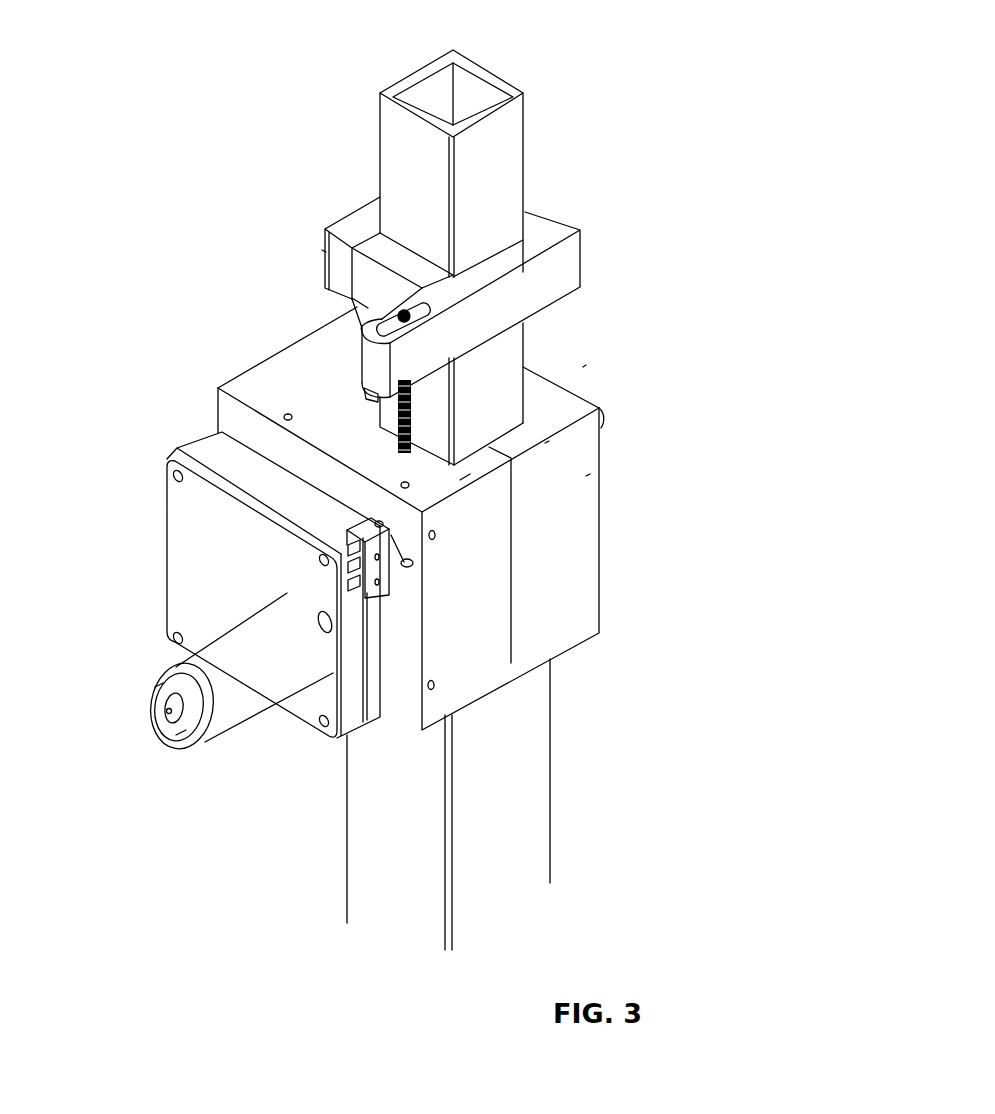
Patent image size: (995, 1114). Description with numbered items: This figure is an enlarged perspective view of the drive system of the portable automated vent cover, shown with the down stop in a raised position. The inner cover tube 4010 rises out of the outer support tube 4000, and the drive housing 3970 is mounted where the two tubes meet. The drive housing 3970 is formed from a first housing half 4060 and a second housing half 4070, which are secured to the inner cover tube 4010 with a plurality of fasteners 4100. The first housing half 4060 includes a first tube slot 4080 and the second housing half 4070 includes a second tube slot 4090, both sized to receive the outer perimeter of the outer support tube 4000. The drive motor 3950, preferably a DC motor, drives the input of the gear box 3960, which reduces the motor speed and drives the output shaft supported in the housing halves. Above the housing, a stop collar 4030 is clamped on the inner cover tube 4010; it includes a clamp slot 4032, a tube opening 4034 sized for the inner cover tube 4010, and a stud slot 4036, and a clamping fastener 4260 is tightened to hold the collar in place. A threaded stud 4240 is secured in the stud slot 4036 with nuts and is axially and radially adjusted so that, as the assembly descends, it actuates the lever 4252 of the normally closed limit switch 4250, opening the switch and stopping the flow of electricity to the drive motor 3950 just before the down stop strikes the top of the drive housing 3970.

The inner cover tube 4010 is at (512, 138).
The stop collar 4030 is at (439, 268).
The clamp slot 4032 is at (363, 237).
The tube opening 4034 is at (487, 255).
The stud slot 4036 is at (380, 316).
The clamping fastener 4260 is at (322, 249).
The threaded stud 4240 is at (397, 420).
The drive housing 3970 is at (583, 367).
The fasteners 4100 is at (603, 420).
The second tube slot 4090 is at (547, 443).
The second housing half 4070 is at (588, 475).
The first tube slot 4080 is at (468, 455).
The first housing half 4060 is at (480, 621).
The gear box 3960 is at (183, 514).
The drive motor 3950 is at (237, 705).
The limit switch 4250 is at (383, 598).
The lever 4252 is at (410, 570).
The outer support tube 4000 is at (522, 798).